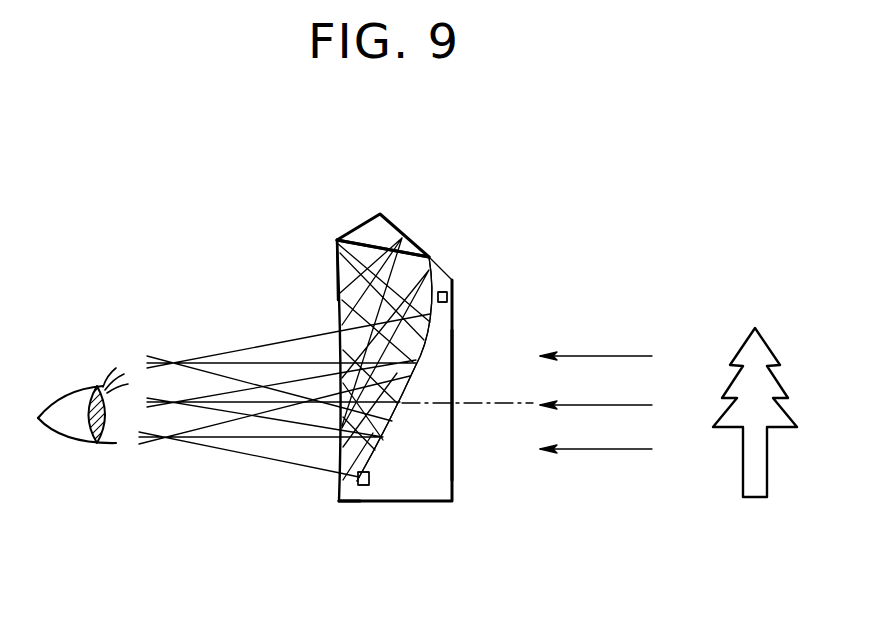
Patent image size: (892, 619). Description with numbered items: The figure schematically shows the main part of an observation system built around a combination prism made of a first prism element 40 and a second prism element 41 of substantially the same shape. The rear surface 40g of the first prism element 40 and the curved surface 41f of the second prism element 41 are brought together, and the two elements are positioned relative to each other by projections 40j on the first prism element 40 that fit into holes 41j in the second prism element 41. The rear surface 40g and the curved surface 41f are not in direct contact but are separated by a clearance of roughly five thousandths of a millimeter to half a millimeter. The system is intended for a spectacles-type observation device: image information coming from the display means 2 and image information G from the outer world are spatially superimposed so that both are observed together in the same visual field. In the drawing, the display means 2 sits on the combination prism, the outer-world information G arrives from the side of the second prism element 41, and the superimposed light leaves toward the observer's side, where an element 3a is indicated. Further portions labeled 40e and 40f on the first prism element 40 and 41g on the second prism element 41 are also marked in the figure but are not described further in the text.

The display means 2 is at (395, 222).
The pupil of observer's eye 3a is at (97, 365).
The first prism element 40 is at (433, 275).
The surface of first optical element 40e is at (372, 247).
The surface of first optical element 40f is at (338, 277).
The rear surface 40g is at (340, 476).
The projections 40j is at (450, 295).
The second prism element 41 is at (415, 490).
The curved surface 41f is at (415, 378).
The surface of second optical element 41g is at (453, 418).
The holes 41j is at (450, 295).
The image information from the outer world G is at (755, 445).